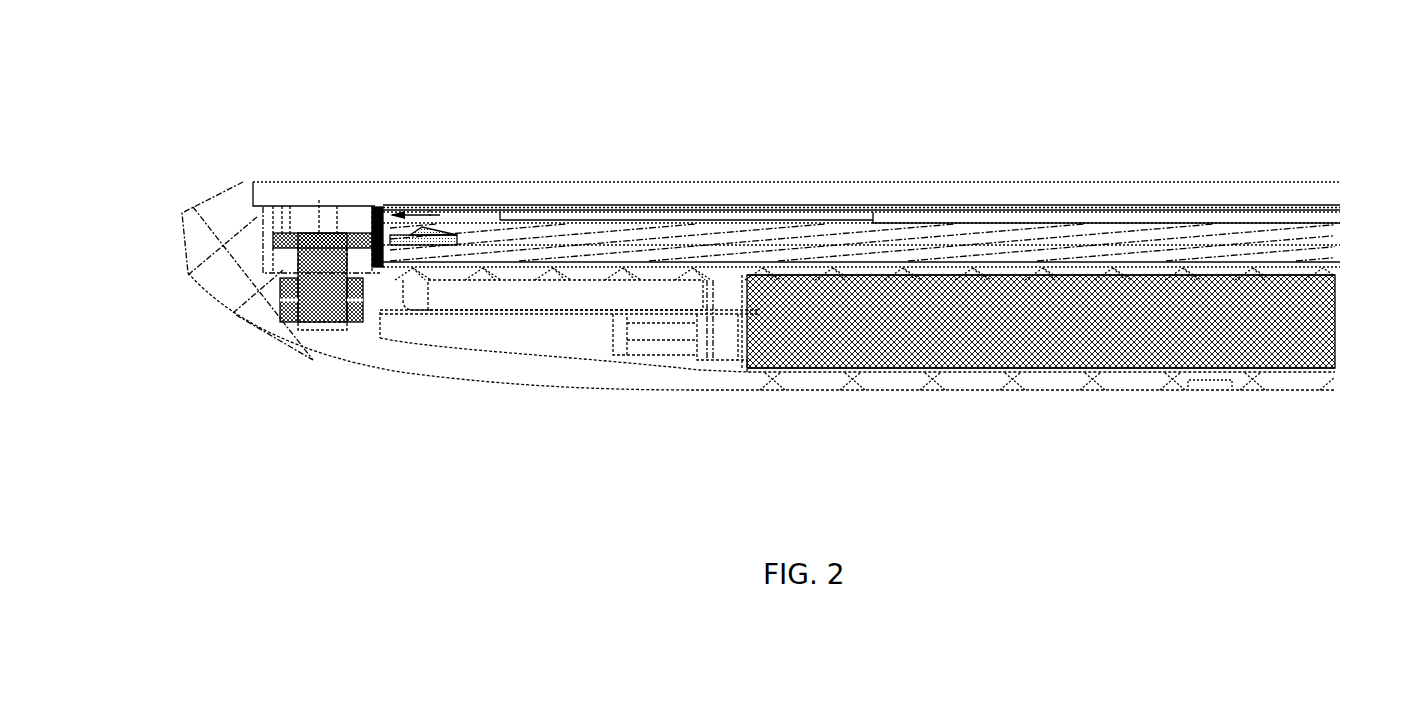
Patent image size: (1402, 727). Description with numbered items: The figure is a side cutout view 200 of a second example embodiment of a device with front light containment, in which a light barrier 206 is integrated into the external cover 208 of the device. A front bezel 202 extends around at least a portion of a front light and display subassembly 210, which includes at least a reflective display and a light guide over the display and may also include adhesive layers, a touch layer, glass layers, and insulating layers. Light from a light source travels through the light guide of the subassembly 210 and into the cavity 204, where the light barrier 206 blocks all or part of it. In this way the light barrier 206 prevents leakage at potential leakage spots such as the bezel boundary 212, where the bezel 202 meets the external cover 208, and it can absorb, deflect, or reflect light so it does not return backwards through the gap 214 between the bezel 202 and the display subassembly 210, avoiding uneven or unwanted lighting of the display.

The side cutout view 200 is at (598, 498).
The front bezel 202 is at (927, 193).
The cavity 204 is at (430, 210).
The light barrier 206 is at (372, 207).
The external cover 208 is at (205, 243).
The front light and display subassembly 210 is at (617, 248).
The bezel boundary 212 is at (240, 180).
The gap 214 is at (448, 205).